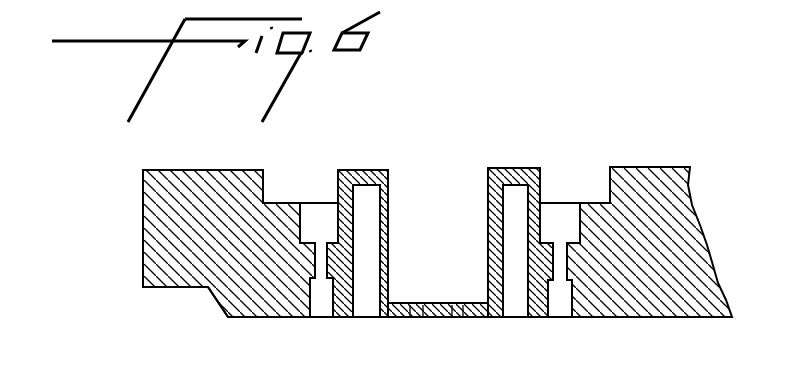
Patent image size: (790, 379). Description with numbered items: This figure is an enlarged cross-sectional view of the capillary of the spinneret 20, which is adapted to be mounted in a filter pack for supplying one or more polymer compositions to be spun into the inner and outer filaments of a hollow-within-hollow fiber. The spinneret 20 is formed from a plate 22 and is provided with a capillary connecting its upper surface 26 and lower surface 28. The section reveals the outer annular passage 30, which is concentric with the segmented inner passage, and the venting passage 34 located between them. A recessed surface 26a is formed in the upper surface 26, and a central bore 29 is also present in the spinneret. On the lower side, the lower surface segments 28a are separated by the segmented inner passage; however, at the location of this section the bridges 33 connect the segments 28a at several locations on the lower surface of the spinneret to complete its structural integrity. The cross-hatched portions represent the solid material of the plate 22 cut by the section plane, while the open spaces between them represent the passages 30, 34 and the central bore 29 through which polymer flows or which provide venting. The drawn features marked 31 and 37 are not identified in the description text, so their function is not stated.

The spinneret 20 is at (130, 207).
The plate 22 is at (143, 289).
The upper surface 26 is at (177, 170).
The recessed surface 26a is at (307, 197).
The lower surface 28 is at (240, 320).
The lower surface segments 28a is at (437, 320).
The central bore 29 is at (446, 215).
The outer annular passage 30 is at (557, 298).
The right recess 31 is at (557, 203).
The bridges 33 is at (413, 320).
The venting passage 34 is at (363, 290).
The right U-shaped member 37 is at (520, 167).